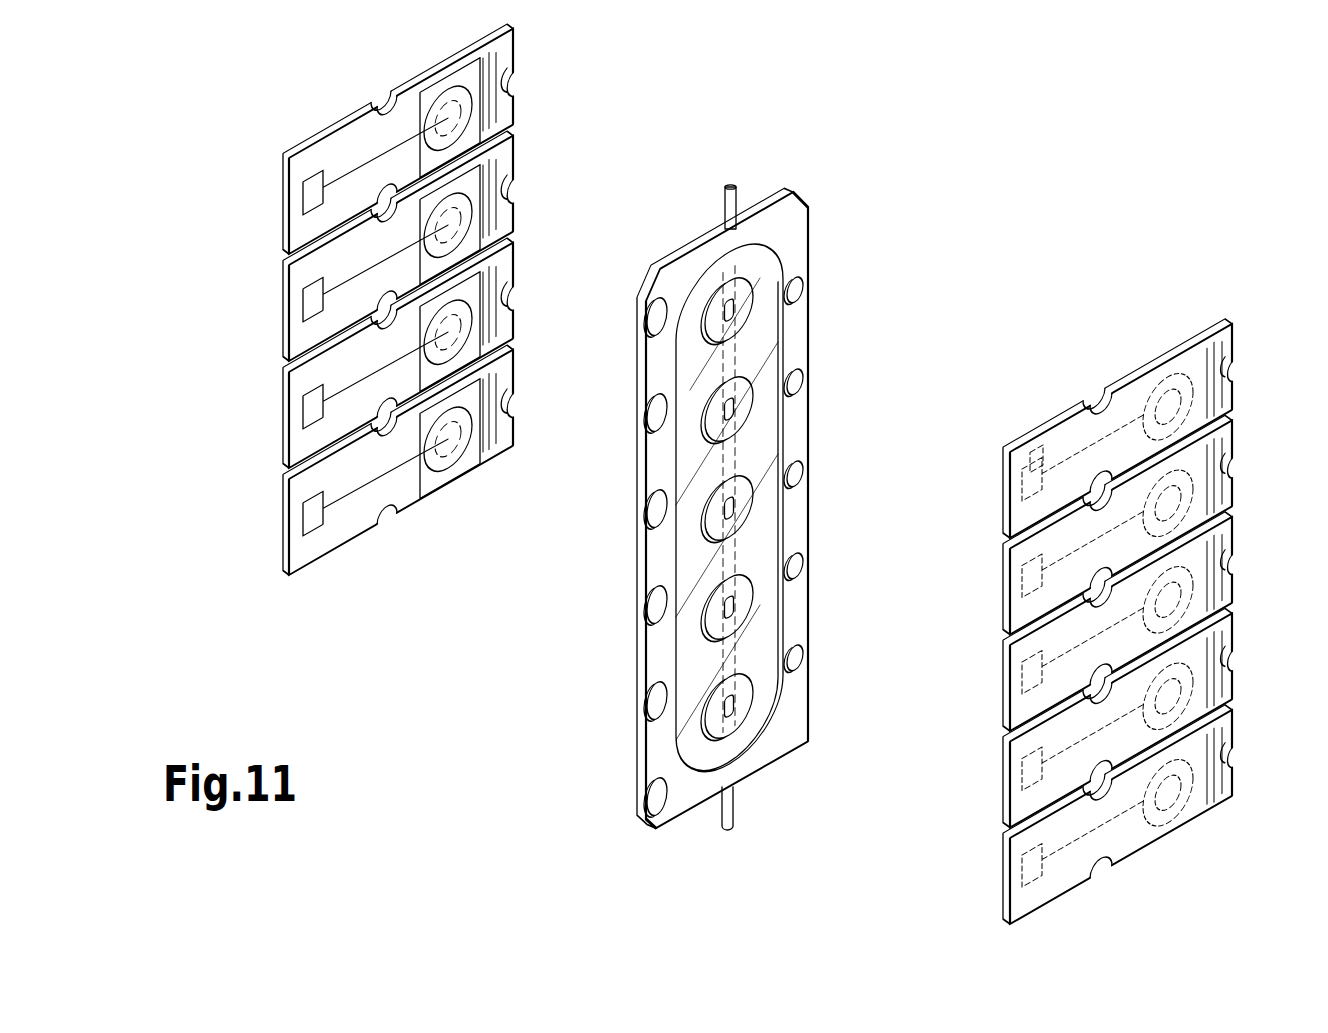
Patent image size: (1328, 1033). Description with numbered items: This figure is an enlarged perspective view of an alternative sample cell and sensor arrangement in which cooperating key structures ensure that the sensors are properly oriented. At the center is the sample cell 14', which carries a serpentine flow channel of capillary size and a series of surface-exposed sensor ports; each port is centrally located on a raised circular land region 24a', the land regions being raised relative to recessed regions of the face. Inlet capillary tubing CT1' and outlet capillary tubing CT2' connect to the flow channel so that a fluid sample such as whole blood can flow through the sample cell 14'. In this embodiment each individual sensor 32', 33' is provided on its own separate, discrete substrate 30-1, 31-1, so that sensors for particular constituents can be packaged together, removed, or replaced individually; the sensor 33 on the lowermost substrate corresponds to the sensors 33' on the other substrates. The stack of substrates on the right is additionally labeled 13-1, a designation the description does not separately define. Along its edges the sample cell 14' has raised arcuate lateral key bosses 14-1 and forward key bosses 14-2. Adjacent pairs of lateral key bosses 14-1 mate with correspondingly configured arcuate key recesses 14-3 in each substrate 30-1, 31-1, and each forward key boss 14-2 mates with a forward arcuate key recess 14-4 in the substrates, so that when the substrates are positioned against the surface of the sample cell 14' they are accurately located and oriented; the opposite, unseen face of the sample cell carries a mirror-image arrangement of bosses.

The sample cell 14' is at (771, 483).
The lateral key bosses 14-1 is at (652, 507).
The forward key bosses 14-2 is at (800, 287).
The arcuate key recesses 14-3 is at (385, 212).
The forward arcuate key recesses 14-4 is at (517, 84).
The land region 24a' is at (804, 509).
The inlet capillary tubing CT1' is at (698, 826).
The outlet capillary tubing CT2' is at (754, 188).
The substrate 30-1 is at (283, 266).
The sensor 32' is at (482, 268).
The substrate 31-1 is at (1003, 572).
The terminal plate 13-1 is at (1003, 742).
The sensor 33' is at (1214, 519).
The sensor 33 is at (1182, 811).